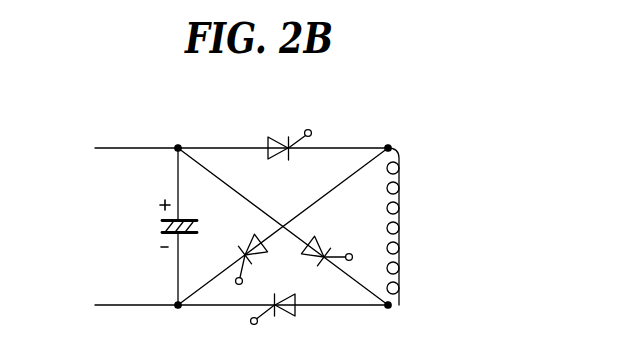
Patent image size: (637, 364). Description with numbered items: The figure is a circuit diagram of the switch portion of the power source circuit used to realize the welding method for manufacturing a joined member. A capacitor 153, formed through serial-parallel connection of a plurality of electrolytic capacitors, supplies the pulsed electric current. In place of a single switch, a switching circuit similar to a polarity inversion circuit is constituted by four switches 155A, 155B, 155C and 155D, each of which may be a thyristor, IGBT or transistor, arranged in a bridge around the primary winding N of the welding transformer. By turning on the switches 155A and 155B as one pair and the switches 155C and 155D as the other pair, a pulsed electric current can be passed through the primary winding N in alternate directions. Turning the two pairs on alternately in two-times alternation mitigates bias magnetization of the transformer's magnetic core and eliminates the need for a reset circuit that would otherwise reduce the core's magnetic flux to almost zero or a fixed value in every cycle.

The capacitor 153 is at (163, 220).
The switch 155A is at (273, 139).
The switch 155B is at (287, 316).
The switch 155C is at (315, 238).
The switch 155D is at (258, 257).
The primary winding N is at (401, 229).